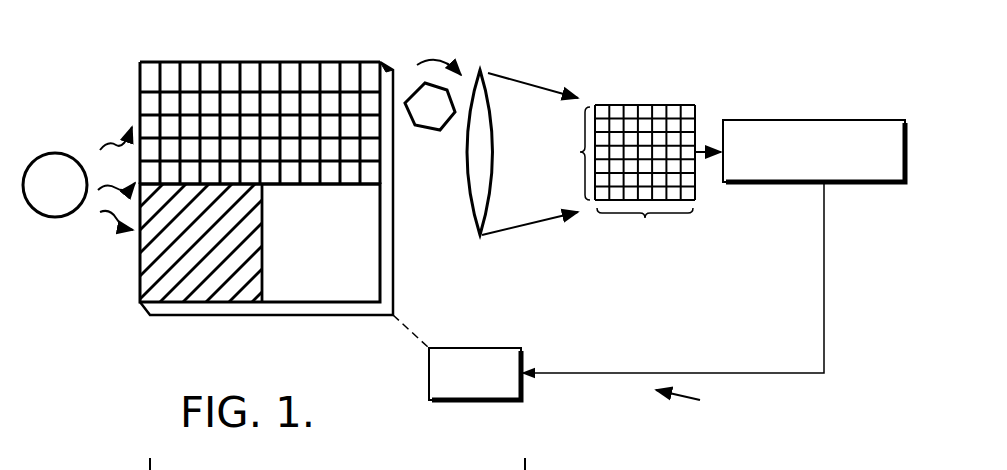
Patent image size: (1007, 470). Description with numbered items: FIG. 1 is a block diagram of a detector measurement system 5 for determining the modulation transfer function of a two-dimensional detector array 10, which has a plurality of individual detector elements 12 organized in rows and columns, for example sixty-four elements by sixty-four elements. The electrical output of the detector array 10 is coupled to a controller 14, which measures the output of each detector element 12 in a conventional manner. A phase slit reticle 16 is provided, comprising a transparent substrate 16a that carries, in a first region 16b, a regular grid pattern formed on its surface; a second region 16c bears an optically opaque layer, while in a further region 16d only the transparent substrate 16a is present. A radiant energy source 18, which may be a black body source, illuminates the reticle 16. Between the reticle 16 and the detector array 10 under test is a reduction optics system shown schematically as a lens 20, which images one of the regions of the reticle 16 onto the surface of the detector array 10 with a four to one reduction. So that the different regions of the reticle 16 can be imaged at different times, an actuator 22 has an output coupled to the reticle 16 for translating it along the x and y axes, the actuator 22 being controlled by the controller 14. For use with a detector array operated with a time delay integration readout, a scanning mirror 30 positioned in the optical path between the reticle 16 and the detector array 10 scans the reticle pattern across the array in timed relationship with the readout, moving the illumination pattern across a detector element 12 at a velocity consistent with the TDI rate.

The detector measurement system 5 is at (688, 402).
The detector array 10 is at (667, 103).
The detector elements 12 is at (615, 112).
The controller 14 is at (843, 120).
The phase slit reticle 16 is at (170, 58).
The transparent substrate 16a is at (387, 67).
The first region 16b is at (280, 80).
The second region 16c is at (193, 253).
The region 16d is at (348, 237).
The radiant energy source 18 is at (73, 157).
The lens 20 is at (482, 68).
The actuator 22 is at (521, 348).
The scanning mirror 30 is at (432, 130).